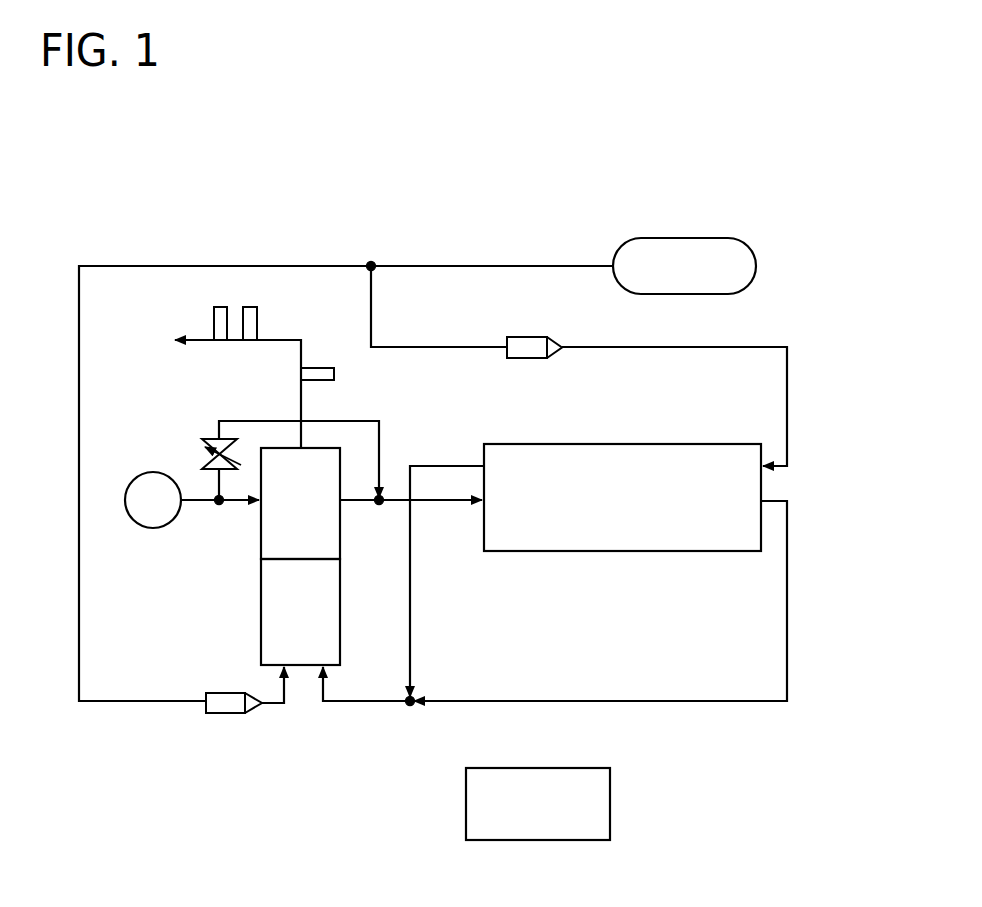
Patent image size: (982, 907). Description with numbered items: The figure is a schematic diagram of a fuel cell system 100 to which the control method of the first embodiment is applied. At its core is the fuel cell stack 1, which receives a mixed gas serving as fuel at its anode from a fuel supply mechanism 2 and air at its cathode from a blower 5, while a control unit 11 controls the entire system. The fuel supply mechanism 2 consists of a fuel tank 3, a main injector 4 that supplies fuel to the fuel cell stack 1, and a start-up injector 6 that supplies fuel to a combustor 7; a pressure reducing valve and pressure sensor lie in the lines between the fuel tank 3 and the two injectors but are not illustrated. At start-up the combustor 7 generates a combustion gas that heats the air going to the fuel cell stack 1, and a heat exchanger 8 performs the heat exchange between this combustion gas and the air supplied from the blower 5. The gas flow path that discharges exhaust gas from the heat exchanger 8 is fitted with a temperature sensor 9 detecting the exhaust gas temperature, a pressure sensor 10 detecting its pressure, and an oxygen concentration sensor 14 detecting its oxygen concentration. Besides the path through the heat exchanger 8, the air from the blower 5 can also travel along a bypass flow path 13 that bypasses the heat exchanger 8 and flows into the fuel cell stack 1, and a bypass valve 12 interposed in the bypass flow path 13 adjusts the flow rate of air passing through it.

The fuel cell system 100 is at (797, 260).
The fuel cell stack 1 is at (636, 551).
The fuel supply mechanism 2 is at (450, 255).
The fuel tank 3 is at (698, 238).
The main injector 4 is at (526, 337).
The blower 5 is at (143, 528).
The start-up injector 6 is at (240, 713).
The combustor 7 is at (261, 612).
The heat exchanger 8 is at (261, 530).
The temperature sensor 9 is at (222, 307).
The pressure sensor 10 is at (250, 307).
The control unit 11 is at (610, 780).
The bypass valve 12 is at (205, 440).
The bypass flow path 13 is at (350, 421).
The oxygen concentration sensor 14 is at (316, 368).